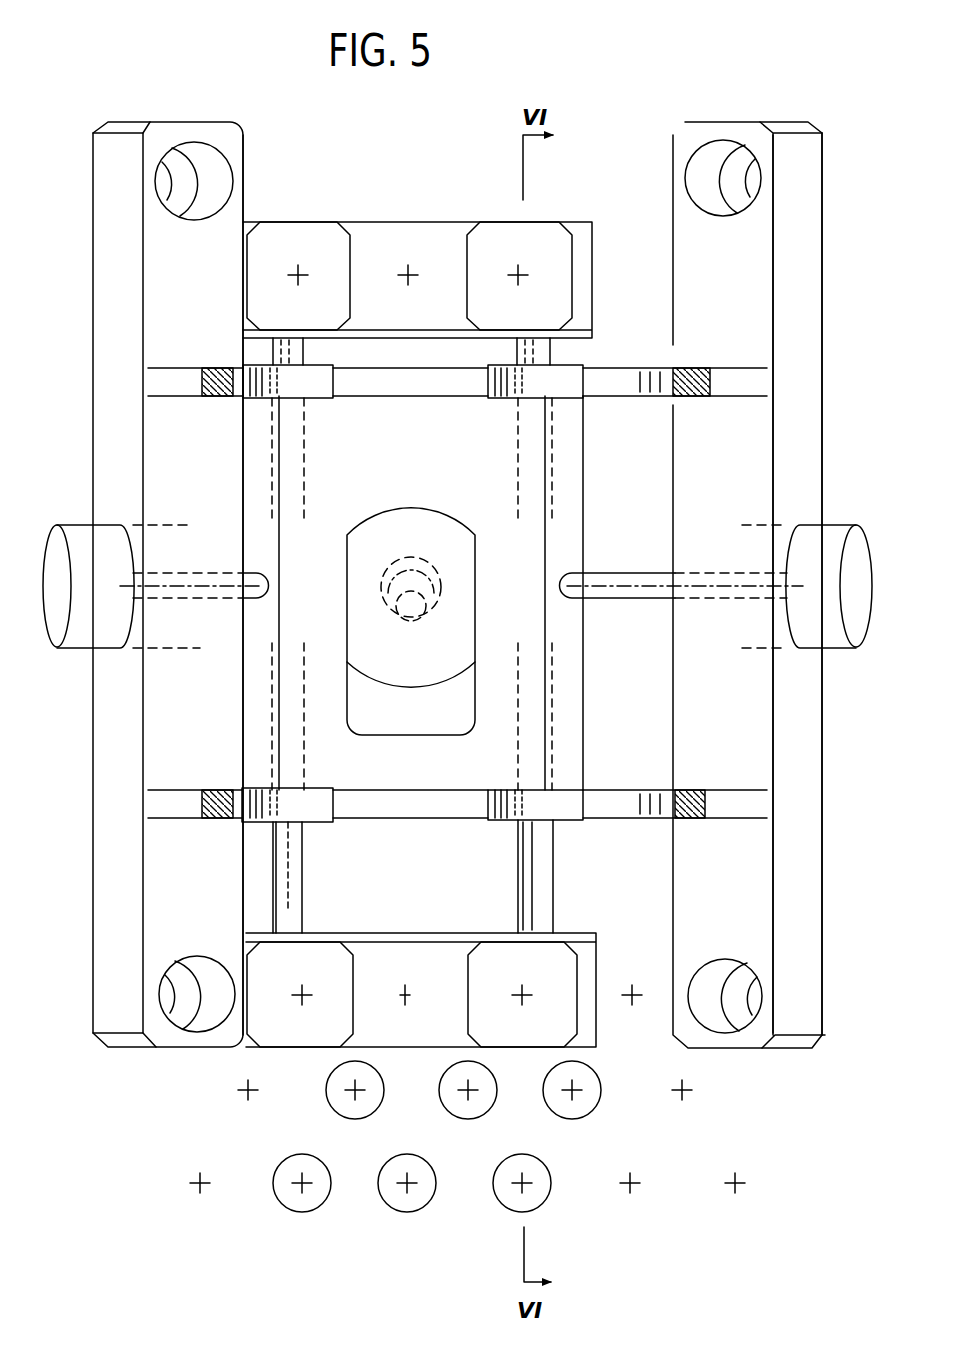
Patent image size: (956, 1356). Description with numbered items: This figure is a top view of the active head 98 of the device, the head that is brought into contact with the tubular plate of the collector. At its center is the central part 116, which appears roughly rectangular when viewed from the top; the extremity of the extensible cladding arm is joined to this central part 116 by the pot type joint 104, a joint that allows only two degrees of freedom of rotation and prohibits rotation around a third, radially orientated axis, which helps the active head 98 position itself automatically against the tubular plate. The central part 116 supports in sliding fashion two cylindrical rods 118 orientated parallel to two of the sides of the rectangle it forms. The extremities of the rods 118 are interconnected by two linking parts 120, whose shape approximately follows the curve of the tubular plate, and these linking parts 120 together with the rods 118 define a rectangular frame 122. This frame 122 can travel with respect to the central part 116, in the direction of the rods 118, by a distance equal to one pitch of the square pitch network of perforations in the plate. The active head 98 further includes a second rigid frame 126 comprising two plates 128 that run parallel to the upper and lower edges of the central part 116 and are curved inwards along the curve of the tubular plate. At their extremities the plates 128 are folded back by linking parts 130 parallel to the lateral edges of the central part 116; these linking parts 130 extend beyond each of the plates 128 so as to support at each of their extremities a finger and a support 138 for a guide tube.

The active head 98 is at (597, 198).
The pot type joint 104 is at (336, 552).
The central part 116 is at (498, 497).
The cylindrical rods 118 is at (288, 873).
The linking parts 120 is at (363, 240).
The rectangular frame 122 is at (432, 222).
The second rigid frame 126 is at (827, 162).
The plates 128 is at (690, 820).
The linking parts 130 is at (150, 712).
The support 138 is at (213, 162).